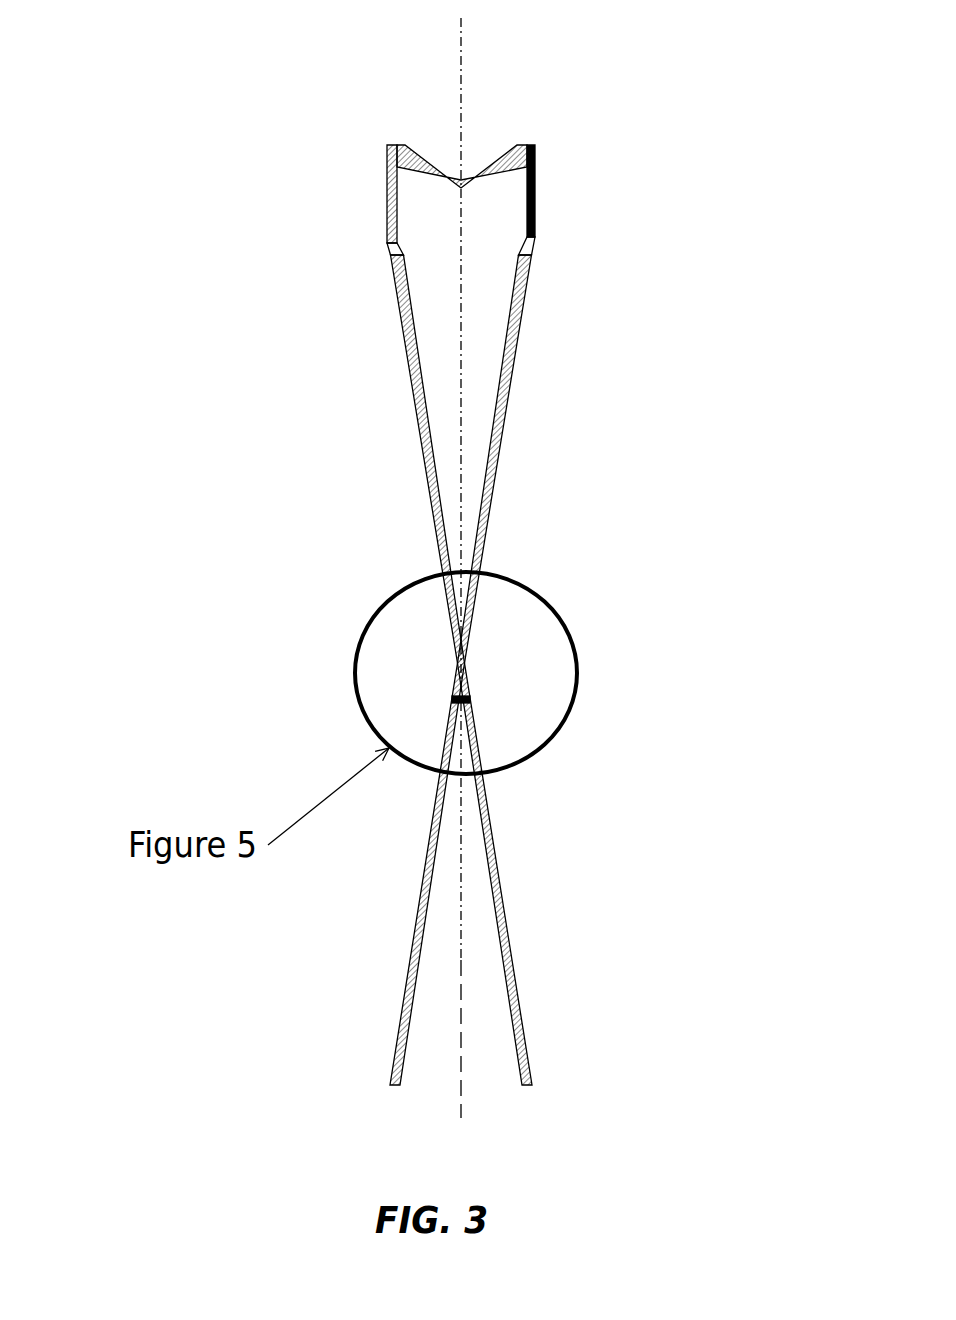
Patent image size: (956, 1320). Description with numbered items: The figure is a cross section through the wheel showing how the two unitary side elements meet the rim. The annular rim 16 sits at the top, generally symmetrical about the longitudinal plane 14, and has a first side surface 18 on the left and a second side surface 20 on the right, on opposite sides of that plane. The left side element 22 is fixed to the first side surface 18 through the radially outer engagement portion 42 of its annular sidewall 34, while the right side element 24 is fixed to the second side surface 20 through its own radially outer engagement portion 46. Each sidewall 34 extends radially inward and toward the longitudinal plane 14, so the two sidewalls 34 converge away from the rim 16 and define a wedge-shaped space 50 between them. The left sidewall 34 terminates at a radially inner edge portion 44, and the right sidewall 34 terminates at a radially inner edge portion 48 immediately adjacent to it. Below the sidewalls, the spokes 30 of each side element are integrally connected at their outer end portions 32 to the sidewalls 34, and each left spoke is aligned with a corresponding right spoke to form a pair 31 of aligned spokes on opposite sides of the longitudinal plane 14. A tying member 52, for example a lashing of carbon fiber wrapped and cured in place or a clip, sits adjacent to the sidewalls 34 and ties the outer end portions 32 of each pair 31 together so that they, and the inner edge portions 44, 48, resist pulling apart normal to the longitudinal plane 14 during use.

The longitudinal plane 14 is at (455, 79).
The annular rim 16 is at (492, 166).
The first side surface 18 is at (390, 183).
The second side surface 20 is at (533, 190).
The radially outer engagement portion 42 is at (388, 203).
The radially outer engagement portion 46 is at (535, 210).
The left side element 22 is at (408, 437).
The right side element 24 is at (507, 452).
The annular sidewall 34 is at (412, 393).
The wedge-shaped space 50 is at (483, 342).
The radially inner edge portion 44 is at (448, 608).
The radially inner edge portion 48 is at (450, 608).
The tying member 52 is at (453, 698).
The outer end portion 32 is at (450, 718).
The pair of aligned spokes 31 is at (493, 800).
The spoke 30 is at (410, 970).